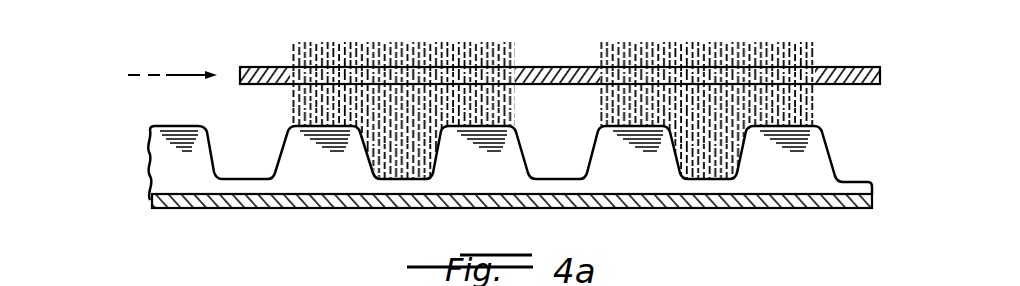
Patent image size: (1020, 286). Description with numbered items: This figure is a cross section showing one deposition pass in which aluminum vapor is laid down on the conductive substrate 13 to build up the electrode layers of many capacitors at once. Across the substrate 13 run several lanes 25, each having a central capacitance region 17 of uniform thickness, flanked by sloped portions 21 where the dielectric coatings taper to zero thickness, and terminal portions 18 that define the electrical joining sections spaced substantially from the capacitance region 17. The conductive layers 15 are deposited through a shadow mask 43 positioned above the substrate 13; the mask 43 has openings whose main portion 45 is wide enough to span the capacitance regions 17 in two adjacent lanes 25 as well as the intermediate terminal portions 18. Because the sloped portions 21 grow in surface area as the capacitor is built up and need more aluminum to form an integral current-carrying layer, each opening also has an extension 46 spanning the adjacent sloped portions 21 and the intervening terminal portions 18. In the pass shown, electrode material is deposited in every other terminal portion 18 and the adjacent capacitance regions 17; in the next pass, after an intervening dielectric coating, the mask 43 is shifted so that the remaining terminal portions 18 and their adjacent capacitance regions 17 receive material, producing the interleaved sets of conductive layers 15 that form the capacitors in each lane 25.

The conductive substrate 13 is at (307, 203).
The conductive layers 15 is at (297, 126).
The central capacitance region 17 is at (173, 132).
The terminal portions 18 is at (255, 179).
The sloped portions 21 is at (433, 160).
The lanes 25 is at (180, 183).
The shadow mask 43 is at (563, 66).
The main portion 45 is at (300, 68).
The extension 46 is at (365, 76).